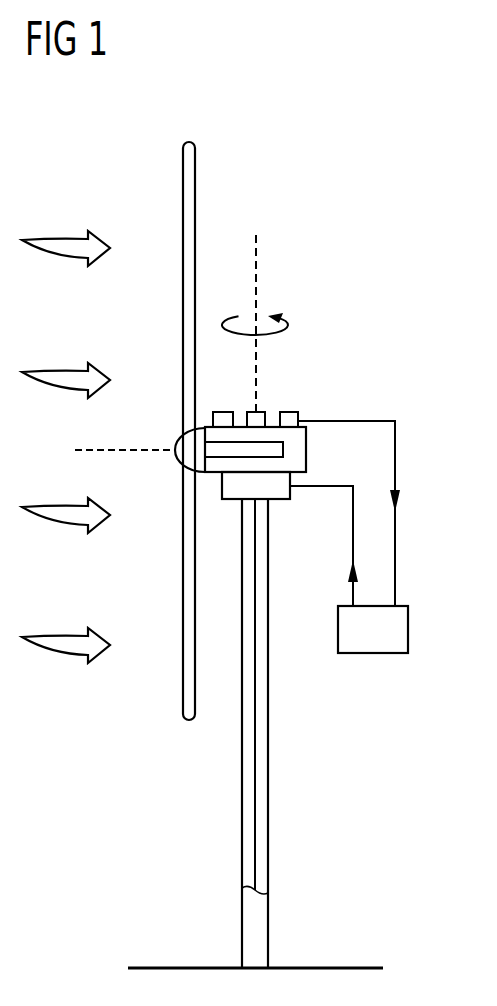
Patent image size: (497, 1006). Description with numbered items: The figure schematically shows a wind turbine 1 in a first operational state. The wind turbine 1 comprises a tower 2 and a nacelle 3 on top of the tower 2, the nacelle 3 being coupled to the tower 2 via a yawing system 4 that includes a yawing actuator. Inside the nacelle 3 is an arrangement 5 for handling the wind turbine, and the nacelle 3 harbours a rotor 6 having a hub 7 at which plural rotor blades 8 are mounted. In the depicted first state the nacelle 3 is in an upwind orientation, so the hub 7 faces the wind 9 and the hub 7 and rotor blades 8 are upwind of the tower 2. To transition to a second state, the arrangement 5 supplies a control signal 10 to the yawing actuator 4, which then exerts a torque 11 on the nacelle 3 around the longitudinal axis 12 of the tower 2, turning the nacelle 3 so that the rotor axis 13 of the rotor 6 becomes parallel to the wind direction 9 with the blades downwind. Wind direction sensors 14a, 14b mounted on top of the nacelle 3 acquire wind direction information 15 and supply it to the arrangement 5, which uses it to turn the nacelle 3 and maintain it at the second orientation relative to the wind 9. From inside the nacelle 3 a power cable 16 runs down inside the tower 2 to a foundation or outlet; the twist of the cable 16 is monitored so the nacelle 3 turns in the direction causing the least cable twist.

The wind turbine 1 is at (98, 142).
The tower 2 is at (250, 936).
The nacelle 3 is at (306, 448).
The yawing system 4 is at (291, 495).
The arrangement 5 is at (408, 630).
The rotor 6 is at (213, 475).
The hub 7 is at (185, 447).
The rotor blades 8 is at (195, 185).
The wind 9 is at (78, 258).
The control signal 10 is at (352, 560).
The torque 11 is at (290, 326).
The longitudinal axis 12 is at (257, 283).
The rotor axis 13 is at (125, 452).
The wind direction sensor 14a is at (222, 410).
The wind direction sensor 14b is at (290, 410).
The wind direction information 15 is at (395, 510).
The power cable 16 is at (255, 850).